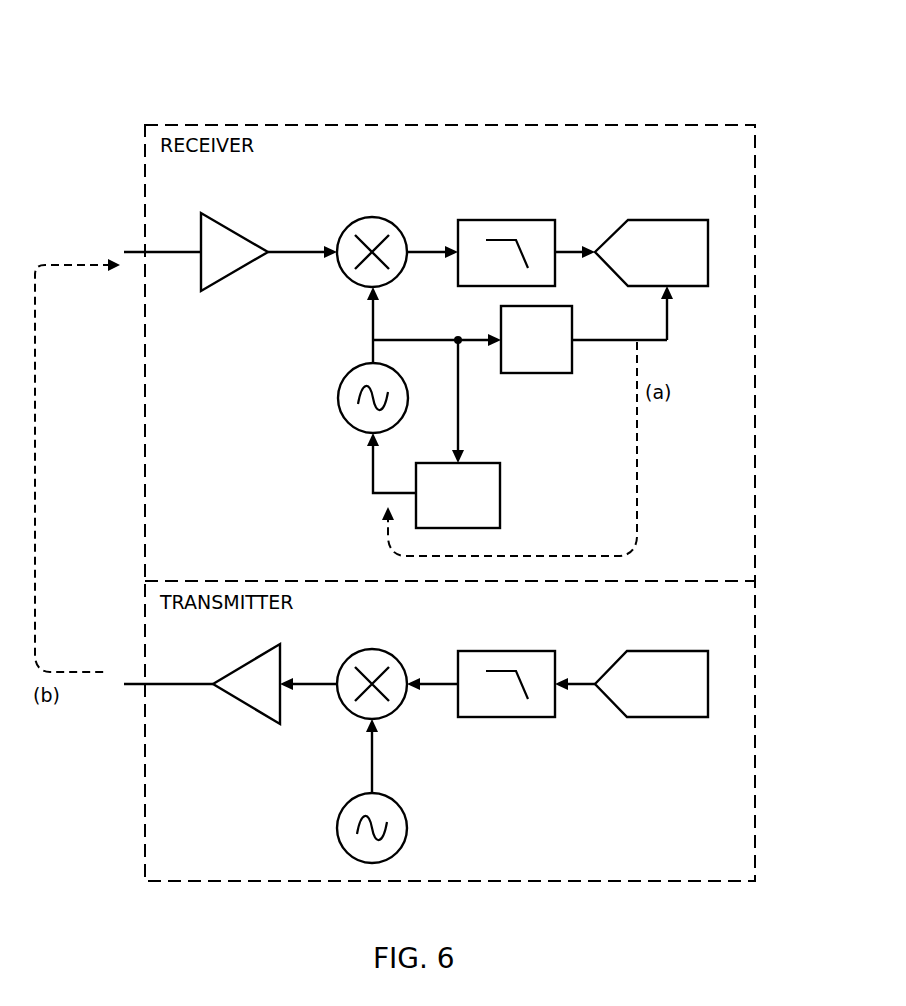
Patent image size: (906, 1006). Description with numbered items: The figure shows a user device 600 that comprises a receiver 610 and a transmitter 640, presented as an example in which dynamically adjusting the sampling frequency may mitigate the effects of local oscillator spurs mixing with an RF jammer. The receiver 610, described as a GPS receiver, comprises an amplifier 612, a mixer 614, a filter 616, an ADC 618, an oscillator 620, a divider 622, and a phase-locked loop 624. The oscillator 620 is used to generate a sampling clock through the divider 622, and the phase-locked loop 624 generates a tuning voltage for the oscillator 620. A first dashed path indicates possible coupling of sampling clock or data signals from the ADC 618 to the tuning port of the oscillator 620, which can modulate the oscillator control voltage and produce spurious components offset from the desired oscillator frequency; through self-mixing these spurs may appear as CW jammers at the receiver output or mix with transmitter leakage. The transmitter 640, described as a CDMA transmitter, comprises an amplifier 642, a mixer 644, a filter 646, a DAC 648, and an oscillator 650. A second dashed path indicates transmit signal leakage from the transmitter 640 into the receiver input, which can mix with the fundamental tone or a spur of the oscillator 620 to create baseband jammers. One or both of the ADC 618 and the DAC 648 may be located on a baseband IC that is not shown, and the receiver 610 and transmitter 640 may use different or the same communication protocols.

The user device 600 is at (196, 72).
The receiver 610 is at (757, 268).
The amplifier 612 is at (222, 224).
The mixer 614 is at (376, 217).
The filter 616 is at (490, 219).
The ADC 618 is at (645, 219).
The oscillator 620 is at (341, 411).
The divider 622 is at (533, 374).
The phase-locked loop (PLL) 624 is at (500, 488).
The transmitter 640 is at (757, 698).
The amplifier 642 is at (262, 714).
The mixer 644 is at (390, 714).
The filter 646 is at (503, 718).
The DAC 648 is at (645, 718).
The oscillator 650 is at (400, 842).